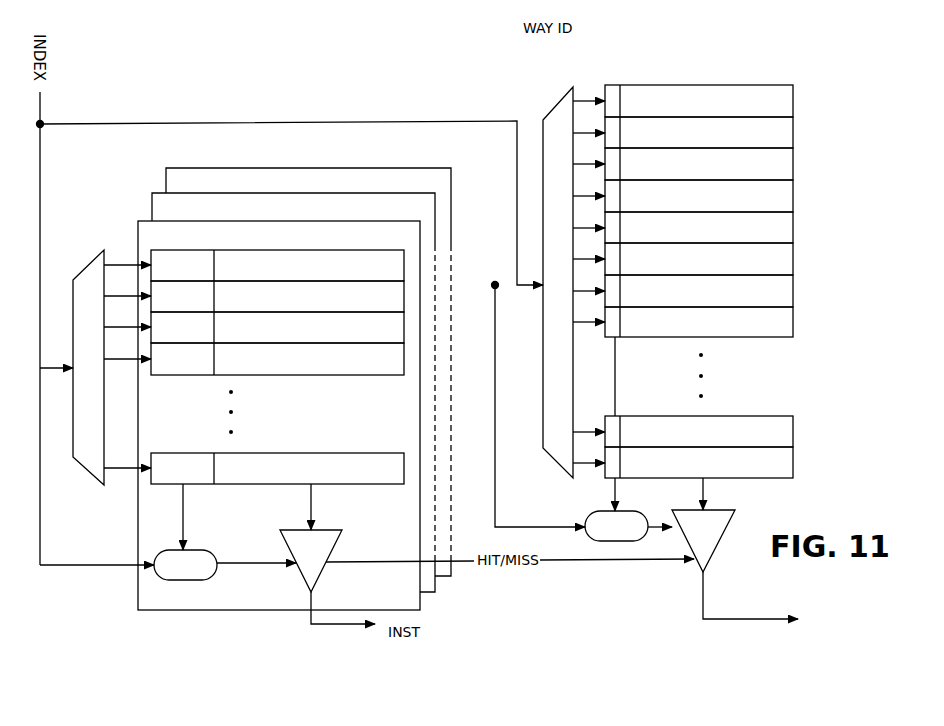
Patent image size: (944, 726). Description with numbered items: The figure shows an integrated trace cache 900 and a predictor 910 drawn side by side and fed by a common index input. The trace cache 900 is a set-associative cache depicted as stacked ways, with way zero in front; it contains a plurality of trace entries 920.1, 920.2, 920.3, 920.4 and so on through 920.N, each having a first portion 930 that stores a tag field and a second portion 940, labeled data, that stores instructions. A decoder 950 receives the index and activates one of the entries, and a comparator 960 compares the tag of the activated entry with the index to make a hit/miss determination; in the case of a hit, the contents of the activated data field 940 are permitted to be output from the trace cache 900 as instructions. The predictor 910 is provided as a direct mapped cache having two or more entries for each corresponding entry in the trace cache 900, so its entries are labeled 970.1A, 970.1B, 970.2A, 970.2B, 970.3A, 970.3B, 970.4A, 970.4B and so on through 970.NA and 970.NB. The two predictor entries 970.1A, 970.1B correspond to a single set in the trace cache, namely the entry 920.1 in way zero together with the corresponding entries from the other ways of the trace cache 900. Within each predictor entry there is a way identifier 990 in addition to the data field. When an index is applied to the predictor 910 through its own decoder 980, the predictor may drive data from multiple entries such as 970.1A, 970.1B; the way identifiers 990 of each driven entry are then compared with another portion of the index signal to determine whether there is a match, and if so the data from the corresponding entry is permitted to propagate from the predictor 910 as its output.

The trace cache 900 is at (140, 640).
The predictor 910 is at (695, 388).
The entry 920.1 is at (309, 260).
The cache line 2 920.2 is at (404, 297).
The cache line 3 920.3 is at (404, 328).
The cache line 4 920.4 is at (404, 359).
The cache line N 920.N is at (404, 456).
The tag field 930 is at (313, 347).
The data field 940 is at (308, 266).
The index decoder 950 is at (84, 470).
The tag comparator 960 is at (185, 580).
The predictor entry 970.1A is at (699, 101).
The predictor entry 970.1B is at (699, 132).
The predictor entry 970.2A is at (699, 164).
The predictor entry 970.2B is at (699, 196).
The distance entry 3A 970.3A is at (699, 227).
The distance entry 3B 970.3B is at (699, 259).
The distance entry 4A 970.4A is at (699, 291).
The distance entry 4B 970.4B is at (699, 322).
The predictor entry 970.NA is at (699, 431).
The predictor entry 970.NB is at (699, 462).
The way-id decoder 980 is at (560, 468).
The way identifier 990 is at (611, 84).